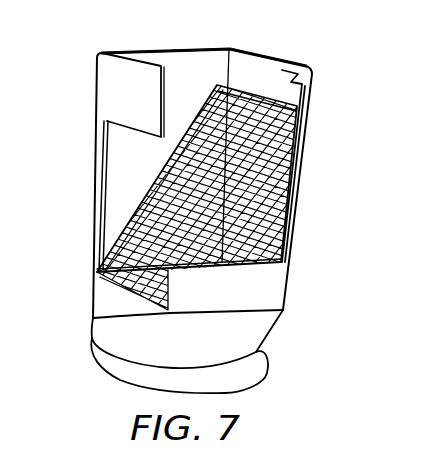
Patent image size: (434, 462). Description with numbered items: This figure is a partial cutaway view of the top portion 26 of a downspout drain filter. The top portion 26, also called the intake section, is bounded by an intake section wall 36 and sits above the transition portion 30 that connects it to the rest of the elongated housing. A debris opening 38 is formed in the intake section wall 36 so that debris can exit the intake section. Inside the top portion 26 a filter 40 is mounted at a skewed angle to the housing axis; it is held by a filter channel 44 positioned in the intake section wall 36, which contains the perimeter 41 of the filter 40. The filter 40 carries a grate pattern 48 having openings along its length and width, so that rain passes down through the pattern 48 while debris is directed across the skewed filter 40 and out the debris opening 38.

The top portion 26 is at (333, 100).
The transition portion 30 is at (280, 352).
The intake section wall 36 is at (118, 136).
The debris opening 38 is at (123, 158).
The filter 40 is at (243, 99).
The perimeter of the filter 41 is at (241, 218).
The filter channel 44 is at (215, 84).
The pattern 48 is at (265, 178).